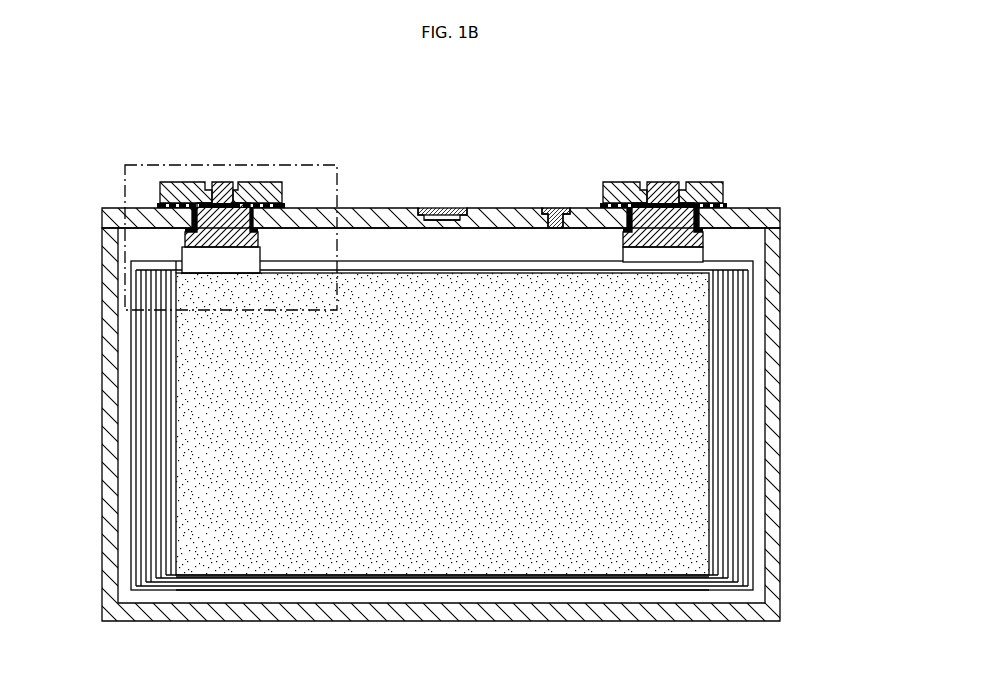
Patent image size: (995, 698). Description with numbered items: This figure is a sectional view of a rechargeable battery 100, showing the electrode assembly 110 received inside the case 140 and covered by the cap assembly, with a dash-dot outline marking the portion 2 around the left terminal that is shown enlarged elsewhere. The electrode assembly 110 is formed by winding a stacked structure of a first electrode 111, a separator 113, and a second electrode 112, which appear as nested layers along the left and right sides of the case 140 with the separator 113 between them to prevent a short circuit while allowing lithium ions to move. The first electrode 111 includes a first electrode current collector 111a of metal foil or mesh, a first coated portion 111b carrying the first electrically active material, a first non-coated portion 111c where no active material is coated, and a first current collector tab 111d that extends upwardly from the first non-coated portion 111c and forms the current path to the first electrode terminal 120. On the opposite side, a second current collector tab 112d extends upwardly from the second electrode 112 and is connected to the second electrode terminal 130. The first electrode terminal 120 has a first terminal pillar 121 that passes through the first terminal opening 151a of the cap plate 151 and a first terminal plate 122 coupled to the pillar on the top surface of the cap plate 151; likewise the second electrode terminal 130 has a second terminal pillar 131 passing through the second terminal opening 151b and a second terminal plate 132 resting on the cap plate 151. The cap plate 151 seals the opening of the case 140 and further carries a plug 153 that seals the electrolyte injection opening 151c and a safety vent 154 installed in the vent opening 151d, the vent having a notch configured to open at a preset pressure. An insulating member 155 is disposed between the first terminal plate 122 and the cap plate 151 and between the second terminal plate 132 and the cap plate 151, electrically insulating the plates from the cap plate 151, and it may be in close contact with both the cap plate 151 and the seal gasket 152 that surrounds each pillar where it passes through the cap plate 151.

The rechargeable battery 100 is at (824, 132).
The portion 2 is at (125, 165).
The electrode assembly 110 is at (415, 600).
The first electrode 111 is at (170, 590).
The first electrode current collector 111a is at (140, 263).
The first coated portion 111b is at (227, 562).
The first non-coated portion 111c is at (300, 582).
The first current collector tab 111d is at (212, 265).
The second electrode 112 is at (732, 270).
The second current collector tab 112d is at (672, 264).
The separator 113 is at (617, 263).
The first electrode terminal 120 is at (292, 124).
The first terminal pillar 121 is at (221, 190).
The first terminal plate 122 is at (268, 195).
The second electrode terminal 130 is at (605, 122).
The second terminal pillar 131 is at (662, 192).
The second terminal plate 132 is at (613, 190).
The case 140 is at (770, 438).
The cap plate 151 is at (397, 213).
The first terminal opening 151a is at (207, 207).
The second terminal opening 151b is at (682, 198).
The electrolyte injection opening 151c is at (560, 231).
The vent opening 151d is at (430, 229).
The seal gasket 152 is at (332, 207).
The plug 153 is at (558, 212).
The safety vent 154 is at (462, 210).
The insulating member 155 is at (260, 224).